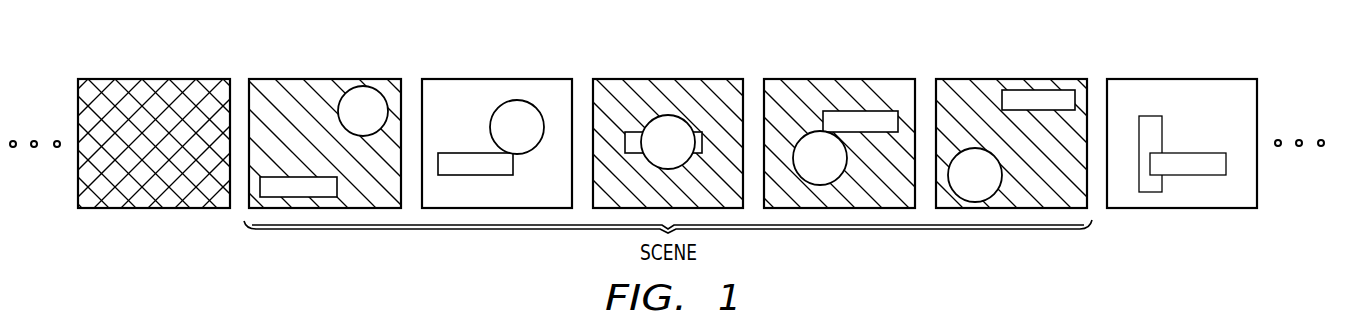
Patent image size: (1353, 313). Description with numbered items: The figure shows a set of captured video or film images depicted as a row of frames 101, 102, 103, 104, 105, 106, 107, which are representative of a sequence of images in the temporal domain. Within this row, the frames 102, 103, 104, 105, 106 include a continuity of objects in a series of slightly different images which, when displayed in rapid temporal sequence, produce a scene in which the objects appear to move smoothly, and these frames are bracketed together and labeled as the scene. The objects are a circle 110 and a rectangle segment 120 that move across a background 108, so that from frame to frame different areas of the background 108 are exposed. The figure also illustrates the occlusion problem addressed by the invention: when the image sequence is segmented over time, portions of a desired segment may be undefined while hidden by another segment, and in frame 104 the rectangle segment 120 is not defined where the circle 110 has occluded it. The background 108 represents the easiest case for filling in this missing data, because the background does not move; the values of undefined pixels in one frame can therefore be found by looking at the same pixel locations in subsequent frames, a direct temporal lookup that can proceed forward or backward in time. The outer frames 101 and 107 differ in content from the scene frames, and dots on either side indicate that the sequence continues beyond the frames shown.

The frame 101 is at (133, 79).
The frame 102 is at (263, 79).
The frame 103 is at (478, 79).
The frame 104 is at (648, 79).
The frame 105 is at (857, 79).
The frame 106 is at (1028, 79).
The frame 107 is at (1200, 79).
The background 108 is at (182, 80).
The circle 110 is at (338, 116).
The rectangle segment 120 is at (295, 177).